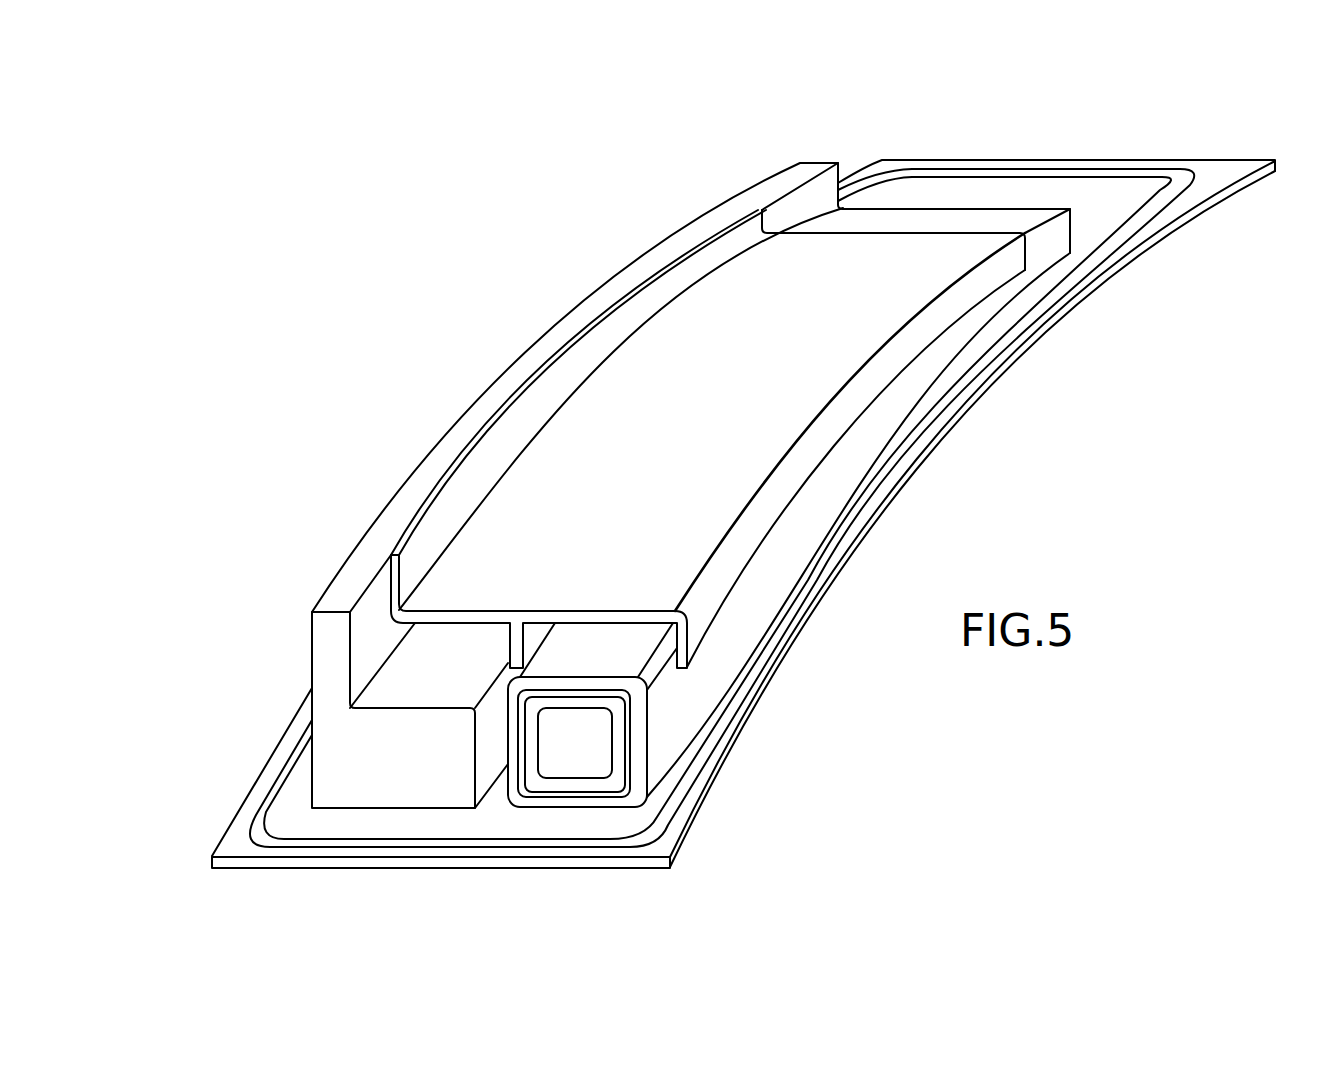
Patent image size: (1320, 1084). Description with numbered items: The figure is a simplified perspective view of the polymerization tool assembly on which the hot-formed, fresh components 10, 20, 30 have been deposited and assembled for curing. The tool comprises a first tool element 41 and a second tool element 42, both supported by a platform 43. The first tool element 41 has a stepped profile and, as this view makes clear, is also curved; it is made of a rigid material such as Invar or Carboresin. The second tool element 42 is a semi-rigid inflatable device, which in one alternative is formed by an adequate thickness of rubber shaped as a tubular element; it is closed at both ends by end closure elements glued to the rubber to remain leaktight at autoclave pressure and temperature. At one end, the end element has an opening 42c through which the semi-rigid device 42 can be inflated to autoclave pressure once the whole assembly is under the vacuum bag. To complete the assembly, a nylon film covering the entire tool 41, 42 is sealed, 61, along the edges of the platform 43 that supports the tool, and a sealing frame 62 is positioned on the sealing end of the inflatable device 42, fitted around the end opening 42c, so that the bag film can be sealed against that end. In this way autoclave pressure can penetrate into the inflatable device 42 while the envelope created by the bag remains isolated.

The hot-formed fresh component 10 is at (716, 438).
The hot-formed fresh component 20 is at (716, 438).
The hot-formed fresh component 30 is at (575, 502).
The first tool element 41 is at (297, 645).
The second tool element (semi-rigid inflatable device) 42 is at (789, 582).
The opening 42c is at (542, 748).
The platform 43 is at (206, 860).
The seal 61 is at (1045, 163).
The sealing frame 62 is at (633, 712).